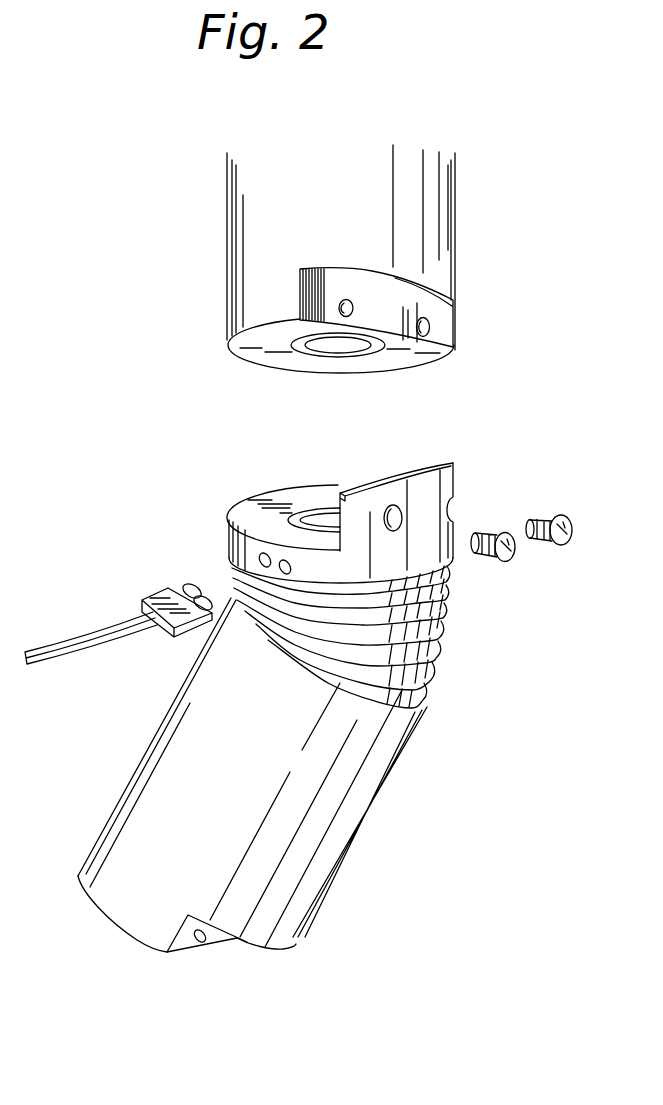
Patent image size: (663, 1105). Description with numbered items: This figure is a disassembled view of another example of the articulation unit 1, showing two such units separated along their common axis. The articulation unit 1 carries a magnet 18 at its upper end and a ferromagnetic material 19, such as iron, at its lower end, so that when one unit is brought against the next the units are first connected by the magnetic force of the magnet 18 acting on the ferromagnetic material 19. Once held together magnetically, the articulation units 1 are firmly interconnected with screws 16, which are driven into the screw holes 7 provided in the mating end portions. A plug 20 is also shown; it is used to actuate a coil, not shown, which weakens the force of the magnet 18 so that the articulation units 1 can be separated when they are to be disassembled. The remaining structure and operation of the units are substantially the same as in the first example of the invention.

The articulation unit 1 is at (462, 202).
The screw holes 7 is at (431, 325).
The screws 16 is at (545, 516).
The magnet 18 is at (282, 493).
The ferromagnetic material 19 is at (304, 354).
The plug 20 is at (103, 650).